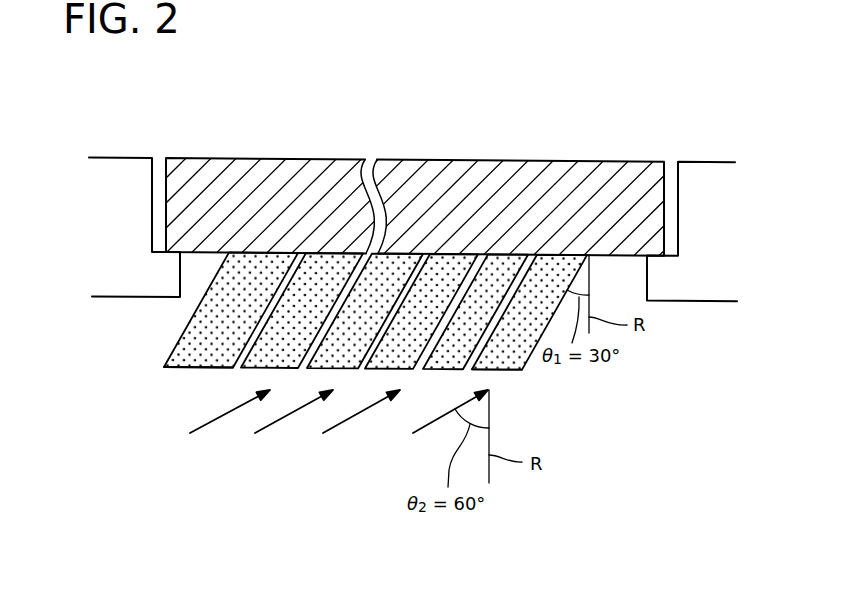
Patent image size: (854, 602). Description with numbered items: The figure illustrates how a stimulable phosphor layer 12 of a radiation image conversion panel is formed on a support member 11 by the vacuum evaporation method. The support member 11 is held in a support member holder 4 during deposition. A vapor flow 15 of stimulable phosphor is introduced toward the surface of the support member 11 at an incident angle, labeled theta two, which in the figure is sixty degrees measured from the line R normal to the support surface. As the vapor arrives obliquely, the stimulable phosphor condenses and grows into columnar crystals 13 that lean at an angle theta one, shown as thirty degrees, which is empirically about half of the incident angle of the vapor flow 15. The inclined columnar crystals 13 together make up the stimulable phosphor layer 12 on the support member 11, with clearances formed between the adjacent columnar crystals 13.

The support member holder 4 is at (127, 167).
The support member 11 is at (242, 165).
The stimulable phosphor layer 12 is at (158, 342).
The columnar crystal 13 is at (167, 369).
The vapor flow 15 is at (353, 420).